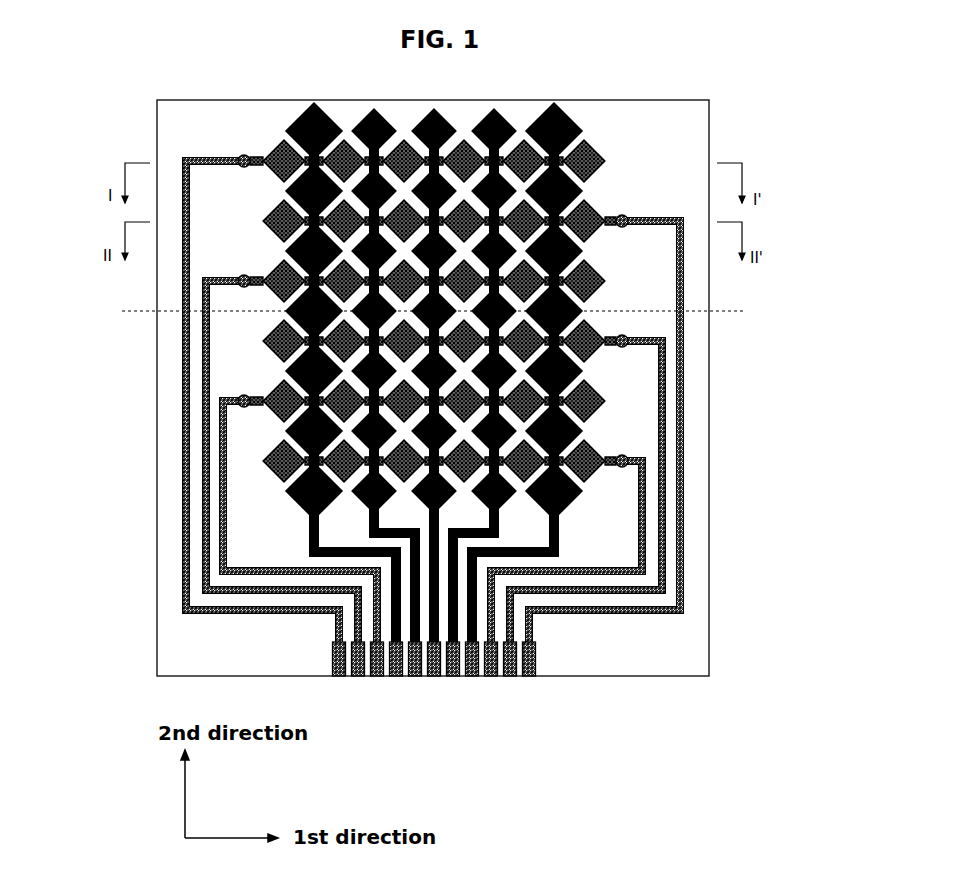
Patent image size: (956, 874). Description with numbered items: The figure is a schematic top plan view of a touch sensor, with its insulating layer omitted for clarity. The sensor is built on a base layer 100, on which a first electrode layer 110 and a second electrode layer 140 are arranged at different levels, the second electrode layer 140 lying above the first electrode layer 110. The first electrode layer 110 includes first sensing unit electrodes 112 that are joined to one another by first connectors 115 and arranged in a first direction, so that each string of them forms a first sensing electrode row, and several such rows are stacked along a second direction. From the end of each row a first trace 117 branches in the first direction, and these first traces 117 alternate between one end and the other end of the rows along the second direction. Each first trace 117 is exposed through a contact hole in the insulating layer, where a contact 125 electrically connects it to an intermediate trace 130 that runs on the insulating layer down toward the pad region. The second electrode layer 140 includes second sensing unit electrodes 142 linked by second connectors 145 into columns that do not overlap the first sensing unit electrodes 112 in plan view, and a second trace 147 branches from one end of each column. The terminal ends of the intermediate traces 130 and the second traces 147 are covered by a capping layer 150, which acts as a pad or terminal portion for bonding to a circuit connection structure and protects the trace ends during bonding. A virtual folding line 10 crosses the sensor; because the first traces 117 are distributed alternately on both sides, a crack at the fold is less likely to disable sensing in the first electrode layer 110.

The virtual folding line 10 is at (733, 310).
The base layer 100 is at (692, 648).
The first electrode layer 110 is at (435, 311).
The first sensing unit electrode 112 is at (594, 387).
The first connector 115 is at (578, 426).
The first trace 117 is at (435, 415).
The contact 125 is at (240, 408).
The intermediate trace 130 is at (204, 496).
The second electrode layer 140 is at (435, 375).
The second sensing unit electrode 142 is at (566, 506).
The second connector 145 is at (598, 458).
The second trace 147 is at (312, 550).
The capping layer 150 is at (527, 677).